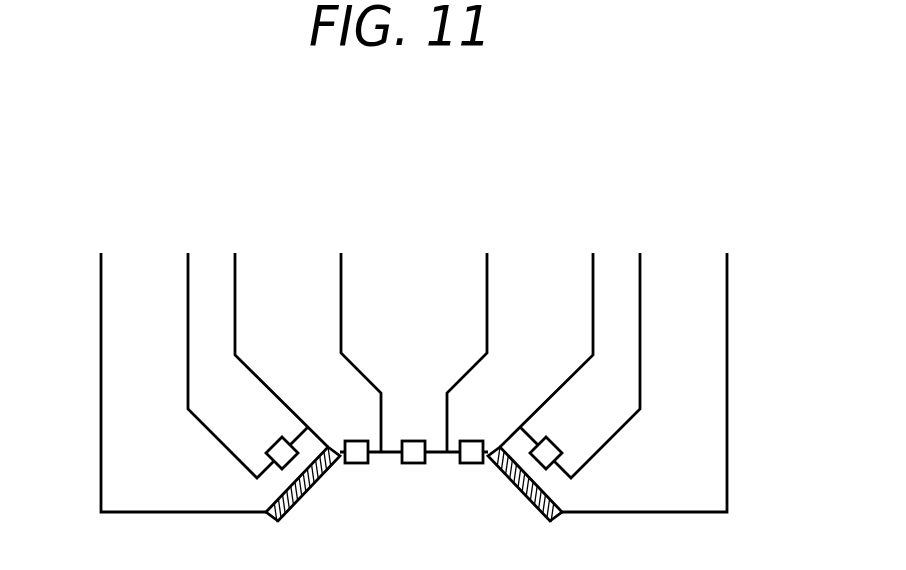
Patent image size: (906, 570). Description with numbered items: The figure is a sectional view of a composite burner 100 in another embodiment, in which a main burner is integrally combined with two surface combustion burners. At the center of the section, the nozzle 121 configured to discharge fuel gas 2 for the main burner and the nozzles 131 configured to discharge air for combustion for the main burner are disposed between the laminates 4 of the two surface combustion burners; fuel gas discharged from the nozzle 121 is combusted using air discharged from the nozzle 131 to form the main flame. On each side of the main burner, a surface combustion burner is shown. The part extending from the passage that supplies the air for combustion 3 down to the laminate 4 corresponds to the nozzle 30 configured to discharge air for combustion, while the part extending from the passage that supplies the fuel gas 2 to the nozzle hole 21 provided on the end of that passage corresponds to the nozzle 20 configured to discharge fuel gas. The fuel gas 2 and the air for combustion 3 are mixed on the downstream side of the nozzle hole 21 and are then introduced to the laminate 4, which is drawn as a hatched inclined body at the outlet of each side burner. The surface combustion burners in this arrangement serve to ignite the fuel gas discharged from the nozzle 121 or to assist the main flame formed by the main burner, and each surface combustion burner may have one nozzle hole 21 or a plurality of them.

The composite burner 100 is at (485, 138).
The fuel gas 2 is at (211, 255).
The air for combustion 3 is at (146, 255).
The nozzle configured to discharge fuel gas 20 is at (203, 275).
The nozzle configured to discharge air for combustion 30 is at (123, 273).
The nozzle hole 21 is at (274, 445).
The laminate 4 is at (307, 490).
The nozzle configured to discharge air for combustion 131 is at (355, 463).
The nozzle configured to discharge fuel gas 121 is at (411, 463).